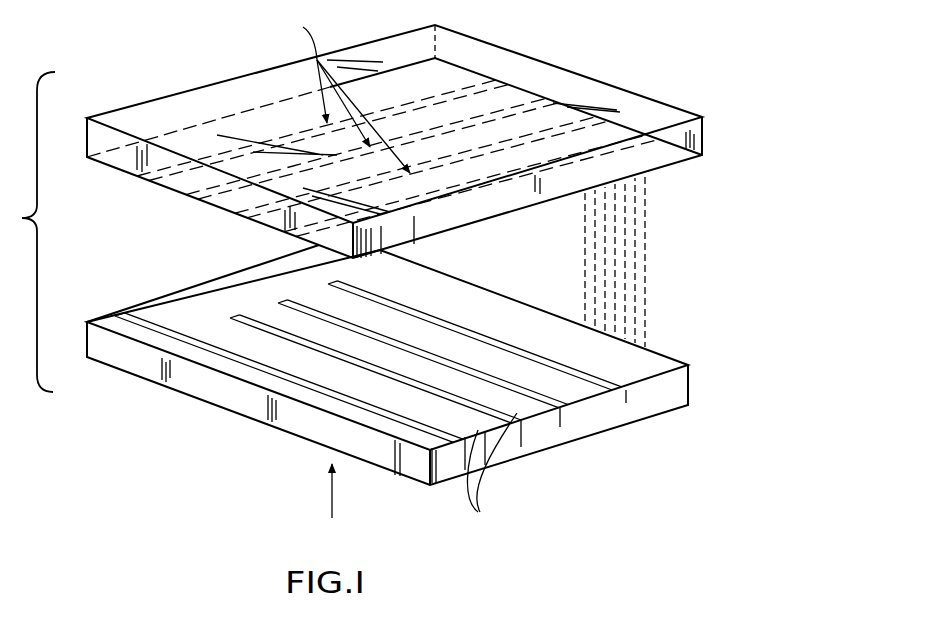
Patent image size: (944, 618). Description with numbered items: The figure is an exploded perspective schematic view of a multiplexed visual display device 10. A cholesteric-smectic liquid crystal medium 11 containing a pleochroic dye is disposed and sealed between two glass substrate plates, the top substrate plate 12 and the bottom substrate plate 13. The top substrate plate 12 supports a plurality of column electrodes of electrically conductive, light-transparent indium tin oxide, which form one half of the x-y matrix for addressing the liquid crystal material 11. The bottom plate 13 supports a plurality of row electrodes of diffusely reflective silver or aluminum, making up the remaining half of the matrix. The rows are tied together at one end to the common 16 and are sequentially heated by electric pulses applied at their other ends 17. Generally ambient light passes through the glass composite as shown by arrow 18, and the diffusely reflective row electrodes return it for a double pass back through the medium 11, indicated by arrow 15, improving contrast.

The visual display device 10 is at (722, 134).
The cholesteric-smectic liquid crystal medium 11 is at (629, 249).
The top substrate plate 12 is at (738, 28).
The bottom substrate plate 13 is at (636, 414).
The arrow indicating double light pass 15 is at (333, 499).
The common 16 is at (140, 312).
The other ends of the row electrodes 17 is at (533, 408).
The arrow indicating light passing through 18 is at (325, 238).